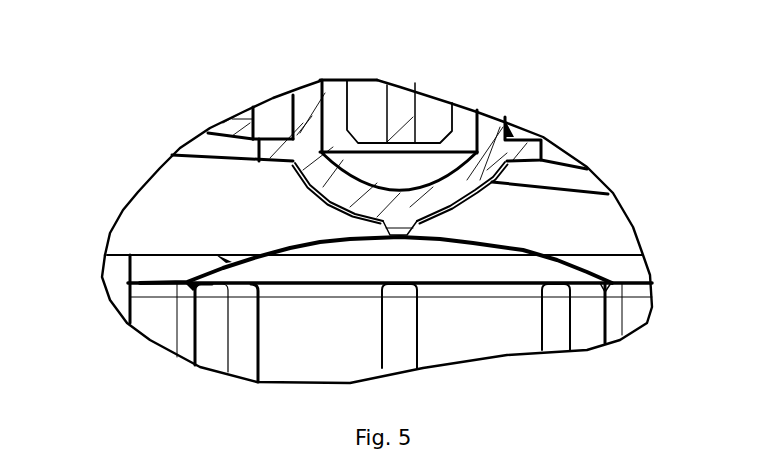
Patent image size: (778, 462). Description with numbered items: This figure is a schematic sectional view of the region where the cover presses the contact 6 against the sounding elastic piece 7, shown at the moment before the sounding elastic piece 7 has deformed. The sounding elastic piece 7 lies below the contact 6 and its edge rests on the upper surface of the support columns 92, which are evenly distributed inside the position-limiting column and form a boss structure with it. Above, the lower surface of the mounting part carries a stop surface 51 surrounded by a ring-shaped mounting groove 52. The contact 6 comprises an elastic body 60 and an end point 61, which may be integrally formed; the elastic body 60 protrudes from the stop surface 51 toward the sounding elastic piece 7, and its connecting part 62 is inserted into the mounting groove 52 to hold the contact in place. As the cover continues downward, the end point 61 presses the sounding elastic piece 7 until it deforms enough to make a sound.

The contact 6 is at (712, 20).
The sounding elastic piece 7 is at (225, 258).
The stop surface 51 is at (186, 136).
The mounting groove 52 is at (252, 95).
The elastic body 60 is at (470, 168).
The end point 61 is at (423, 227).
The connecting part 62 is at (310, 103).
The support column 92 is at (223, 328).